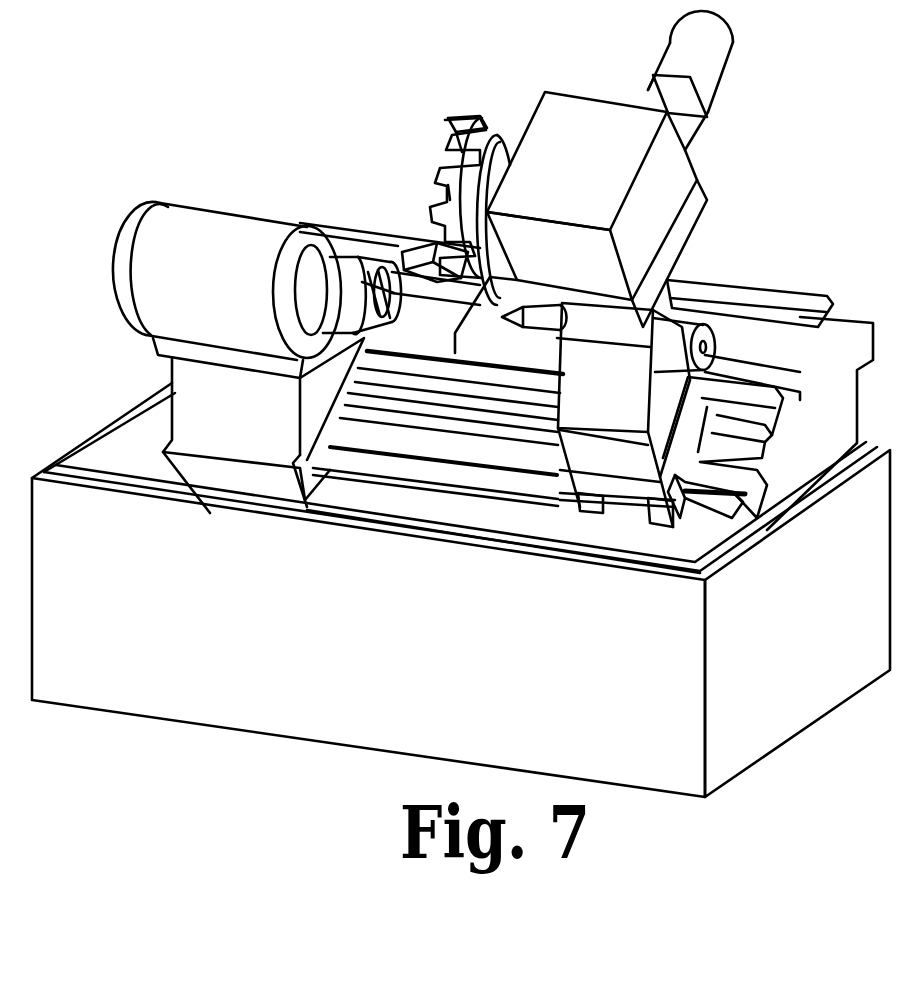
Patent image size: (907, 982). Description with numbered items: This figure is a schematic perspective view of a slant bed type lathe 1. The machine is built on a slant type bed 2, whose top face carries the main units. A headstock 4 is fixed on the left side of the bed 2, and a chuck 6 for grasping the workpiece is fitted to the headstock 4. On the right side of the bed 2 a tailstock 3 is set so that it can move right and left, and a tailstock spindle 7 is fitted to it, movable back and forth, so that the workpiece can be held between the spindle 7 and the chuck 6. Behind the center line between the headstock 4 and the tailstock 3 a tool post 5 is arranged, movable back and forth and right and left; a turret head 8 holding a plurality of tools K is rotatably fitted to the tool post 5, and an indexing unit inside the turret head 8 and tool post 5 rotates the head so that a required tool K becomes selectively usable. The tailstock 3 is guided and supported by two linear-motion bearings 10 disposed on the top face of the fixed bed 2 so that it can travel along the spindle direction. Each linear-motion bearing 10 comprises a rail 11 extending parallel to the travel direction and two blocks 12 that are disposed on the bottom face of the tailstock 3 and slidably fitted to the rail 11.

The machine tool 1 is at (799, 198).
The slant type bed 2 is at (430, 500).
The tailstock 3 is at (562, 480).
The headstock 4 is at (242, 430).
The tool post 5 is at (565, 105).
The chuck 6 is at (357, 258).
The tailstock spindle 7 is at (522, 330).
The turret head 8 is at (447, 200).
The linear-motion bearings 10 is at (665, 623).
The rail 11 is at (723, 520).
The blocks 12 is at (657, 517).
The tools K is at (392, 245).